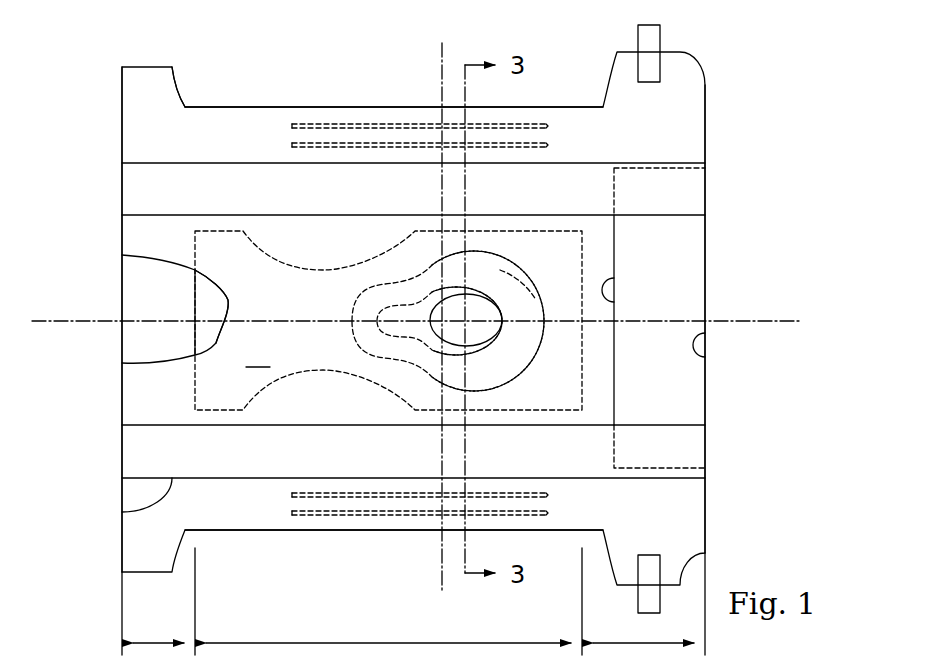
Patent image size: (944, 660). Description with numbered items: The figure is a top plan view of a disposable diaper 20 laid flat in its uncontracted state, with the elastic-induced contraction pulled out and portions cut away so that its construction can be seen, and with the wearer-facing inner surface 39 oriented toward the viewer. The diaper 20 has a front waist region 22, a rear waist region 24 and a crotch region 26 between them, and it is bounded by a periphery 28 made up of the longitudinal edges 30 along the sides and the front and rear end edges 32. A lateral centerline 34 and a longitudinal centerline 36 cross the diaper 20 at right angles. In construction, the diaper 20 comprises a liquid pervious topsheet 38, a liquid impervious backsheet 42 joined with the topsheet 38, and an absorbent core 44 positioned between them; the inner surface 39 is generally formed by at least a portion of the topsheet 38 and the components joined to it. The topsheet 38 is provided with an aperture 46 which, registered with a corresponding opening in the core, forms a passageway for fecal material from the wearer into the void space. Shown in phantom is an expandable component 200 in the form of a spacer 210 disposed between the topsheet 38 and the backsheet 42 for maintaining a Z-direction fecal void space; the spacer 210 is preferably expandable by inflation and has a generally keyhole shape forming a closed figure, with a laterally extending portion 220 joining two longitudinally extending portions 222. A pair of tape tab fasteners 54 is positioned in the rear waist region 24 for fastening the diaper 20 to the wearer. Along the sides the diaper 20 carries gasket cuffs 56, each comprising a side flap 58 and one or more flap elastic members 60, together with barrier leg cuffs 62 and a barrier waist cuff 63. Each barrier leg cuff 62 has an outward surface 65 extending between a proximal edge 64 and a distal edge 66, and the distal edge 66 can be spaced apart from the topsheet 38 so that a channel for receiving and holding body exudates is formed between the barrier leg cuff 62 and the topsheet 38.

The diaper 20 is at (720, 54).
The front waist region 22 is at (163, 640).
The rear waist region 24 is at (646, 643).
The crotch region 26 is at (390, 643).
The periphery 28 is at (177, 85).
The longitudinal edges 30 is at (218, 107).
The front and rear end edges 32 is at (122, 118).
The lateral centerline 34 is at (442, 43).
The longitudinal centerline 36 is at (48, 322).
The topsheet 38 is at (142, 236).
The inner surface 39 is at (388, 320).
The backsheet 42 is at (137, 343).
The absorbent core 44 is at (210, 300).
The aperture 46 is at (478, 337).
The tape tab fasteners 54 is at (640, 25).
The gasket cuffs 56 is at (412, 133).
The side flap 58 is at (307, 117).
The flap elastic members 60 is at (548, 126).
The barrier leg cuffs 62 is at (160, 188).
The barrier waist cuff 63 is at (688, 241).
The proximal edge 64 is at (145, 511).
The outward surface 65 is at (267, 430).
The distal edge 66 is at (616, 302).
The expandable component 200 is at (547, 261).
The spacer 210 is at (542, 292).
The laterally extending portion 220 is at (352, 305).
The longitudinally extending portions 222 is at (492, 272).